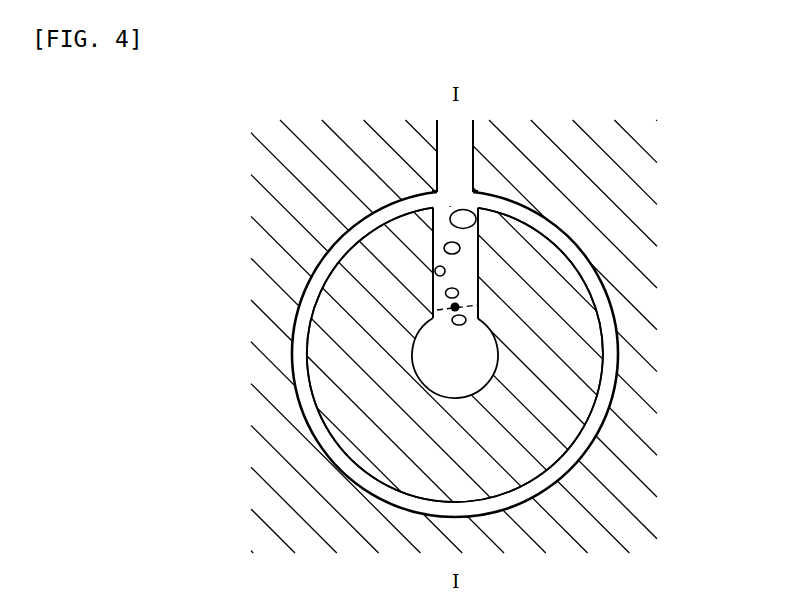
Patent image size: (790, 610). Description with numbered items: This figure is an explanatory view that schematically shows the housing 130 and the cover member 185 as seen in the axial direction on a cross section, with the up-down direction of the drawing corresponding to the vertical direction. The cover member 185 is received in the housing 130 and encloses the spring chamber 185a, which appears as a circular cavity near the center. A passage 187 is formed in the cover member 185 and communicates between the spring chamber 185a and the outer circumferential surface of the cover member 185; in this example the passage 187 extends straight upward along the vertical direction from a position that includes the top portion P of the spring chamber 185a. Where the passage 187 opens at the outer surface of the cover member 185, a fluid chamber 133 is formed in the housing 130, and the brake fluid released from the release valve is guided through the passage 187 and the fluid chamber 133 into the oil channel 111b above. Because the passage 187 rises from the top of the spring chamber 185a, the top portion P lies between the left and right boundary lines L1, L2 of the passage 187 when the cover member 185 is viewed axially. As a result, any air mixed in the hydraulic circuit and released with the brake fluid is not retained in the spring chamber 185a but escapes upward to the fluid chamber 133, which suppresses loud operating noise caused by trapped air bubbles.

The housing 130 is at (633, 194).
The oil channel 111b is at (462, 153).
The fluid chamber 133 is at (500, 207).
The cover member 185 is at (577, 400).
The spring chamber 185a is at (487, 357).
The passage 187 is at (463, 280).
The left boundary line L1 is at (433, 243).
The right boundary line L2 is at (479, 243).
The top portion P is at (455, 307).